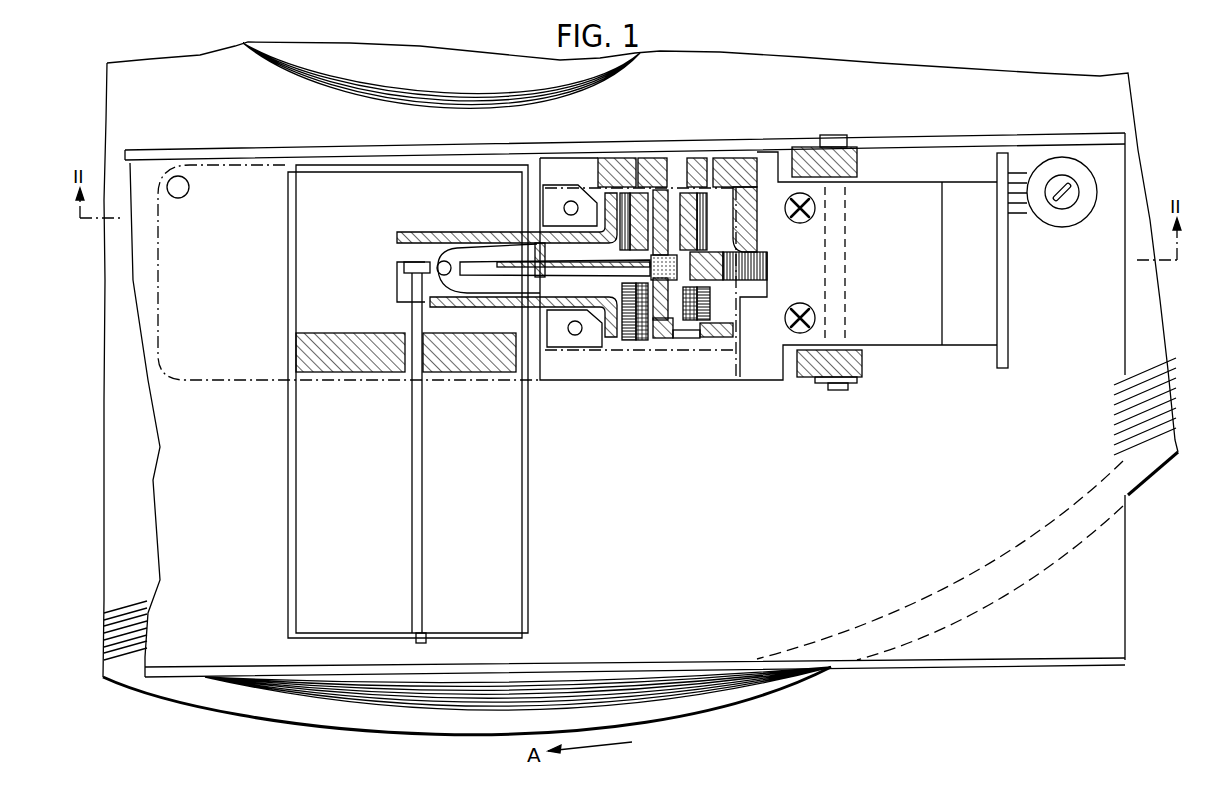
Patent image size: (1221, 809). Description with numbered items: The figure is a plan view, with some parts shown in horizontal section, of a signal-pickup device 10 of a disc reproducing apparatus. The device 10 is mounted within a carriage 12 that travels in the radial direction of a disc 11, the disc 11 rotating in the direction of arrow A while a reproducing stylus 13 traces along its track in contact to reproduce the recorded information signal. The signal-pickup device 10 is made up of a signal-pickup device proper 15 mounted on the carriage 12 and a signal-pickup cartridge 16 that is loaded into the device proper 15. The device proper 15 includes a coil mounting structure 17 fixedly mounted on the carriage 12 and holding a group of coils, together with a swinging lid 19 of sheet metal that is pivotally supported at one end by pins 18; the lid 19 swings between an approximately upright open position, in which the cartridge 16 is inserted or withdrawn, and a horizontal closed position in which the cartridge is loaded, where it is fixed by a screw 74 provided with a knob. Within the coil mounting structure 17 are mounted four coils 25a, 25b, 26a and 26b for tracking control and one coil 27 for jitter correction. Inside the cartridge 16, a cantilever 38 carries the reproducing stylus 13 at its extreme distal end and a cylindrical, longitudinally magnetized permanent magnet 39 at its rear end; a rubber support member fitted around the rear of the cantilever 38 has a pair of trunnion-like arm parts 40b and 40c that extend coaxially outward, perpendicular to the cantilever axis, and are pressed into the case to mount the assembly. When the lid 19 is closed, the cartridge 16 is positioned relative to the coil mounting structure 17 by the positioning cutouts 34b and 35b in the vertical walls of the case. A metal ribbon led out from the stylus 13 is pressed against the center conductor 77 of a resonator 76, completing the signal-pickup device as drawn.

The signal-pickup device 10 is at (842, 48).
The disc 11 is at (742, 692).
The carriage 12 is at (1035, 660).
The reproducing stylus 13 is at (454, 259).
The signal-pickup device proper 15 is at (762, 380).
The signal-pickup cartridge 16 is at (407, 227).
The coil mounting structure 17 is at (907, 347).
The pins 18 is at (838, 391).
The swinging lid 19 is at (247, 385).
The coil 25a is at (633, 342).
The coil 25b is at (622, 196).
The coil 26a is at (703, 310).
The coil 26b is at (709, 236).
The coil for jitter correction 27 is at (760, 281).
The cutout for positioning 34b is at (697, 340).
The cutout for positioning 35b is at (704, 198).
The cantilever 38 is at (505, 261).
The permanent magnet 39 is at (598, 228).
The arm part 40b is at (641, 342).
The arm part 40c is at (676, 190).
The screw 74 is at (178, 176).
The resonator 76 is at (291, 502).
The center conductor 77 is at (412, 465).